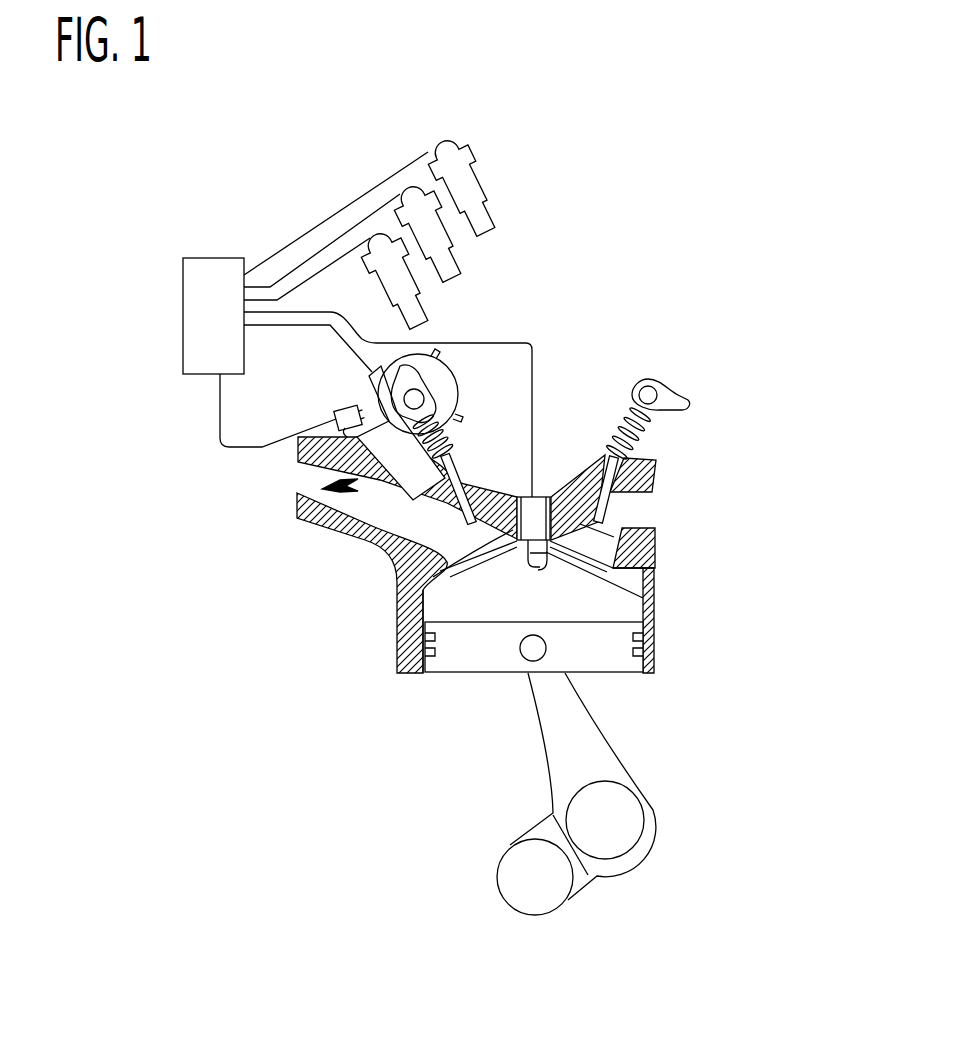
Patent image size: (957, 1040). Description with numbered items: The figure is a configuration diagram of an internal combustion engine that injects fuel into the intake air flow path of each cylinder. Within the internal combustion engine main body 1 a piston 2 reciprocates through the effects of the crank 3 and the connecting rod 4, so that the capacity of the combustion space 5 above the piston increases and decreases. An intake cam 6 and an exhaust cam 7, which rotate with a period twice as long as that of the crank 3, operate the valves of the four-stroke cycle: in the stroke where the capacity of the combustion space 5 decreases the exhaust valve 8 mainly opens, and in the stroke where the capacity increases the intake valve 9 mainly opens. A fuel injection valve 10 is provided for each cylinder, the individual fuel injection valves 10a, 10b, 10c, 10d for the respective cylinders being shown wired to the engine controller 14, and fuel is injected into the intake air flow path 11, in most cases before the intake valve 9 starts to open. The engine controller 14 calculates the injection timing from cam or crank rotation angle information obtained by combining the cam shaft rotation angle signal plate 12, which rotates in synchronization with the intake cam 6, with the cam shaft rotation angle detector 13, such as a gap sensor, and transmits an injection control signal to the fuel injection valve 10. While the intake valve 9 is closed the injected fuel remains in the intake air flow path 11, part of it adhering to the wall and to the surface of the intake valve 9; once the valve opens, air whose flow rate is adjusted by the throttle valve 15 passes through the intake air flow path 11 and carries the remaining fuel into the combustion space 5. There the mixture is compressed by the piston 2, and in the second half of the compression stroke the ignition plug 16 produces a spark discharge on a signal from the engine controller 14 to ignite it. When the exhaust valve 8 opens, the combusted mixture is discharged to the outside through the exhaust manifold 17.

The internal combustion engine main body 1 is at (397, 647).
The piston 2 is at (613, 660).
The crank 3 is at (623, 880).
The connecting rod 4 is at (587, 745).
The combustion space 5 is at (590, 610).
The intake cam 6 is at (408, 373).
The exhaust cam 7 is at (672, 395).
The exhaust valve 8 is at (630, 548).
The intake valve 9 is at (397, 602).
The fuel injection valve 10 is at (520, 196).
The fuel injector (first cylinder) 10a is at (378, 438).
The fuel injector (second cylinder) 10b is at (372, 263).
The fuel injector (third cylinder) 10c is at (410, 232).
The fuel injector (fourth cylinder) 10d is at (521, 186).
The intake air flow path 11 is at (402, 502).
The cam shaft rotation angle signal plate 12 is at (437, 383).
The cam shaft rotation angle detector 13 is at (300, 447).
The engine controller 14 is at (217, 268).
The throttle valve 15 is at (322, 486).
The ignition plug 16 is at (645, 598).
The exhaust manifold 17 is at (633, 513).